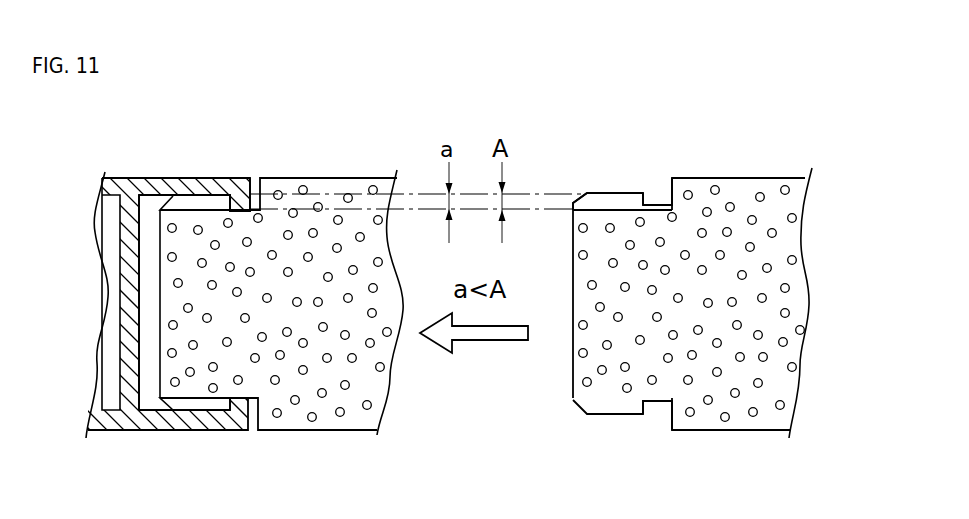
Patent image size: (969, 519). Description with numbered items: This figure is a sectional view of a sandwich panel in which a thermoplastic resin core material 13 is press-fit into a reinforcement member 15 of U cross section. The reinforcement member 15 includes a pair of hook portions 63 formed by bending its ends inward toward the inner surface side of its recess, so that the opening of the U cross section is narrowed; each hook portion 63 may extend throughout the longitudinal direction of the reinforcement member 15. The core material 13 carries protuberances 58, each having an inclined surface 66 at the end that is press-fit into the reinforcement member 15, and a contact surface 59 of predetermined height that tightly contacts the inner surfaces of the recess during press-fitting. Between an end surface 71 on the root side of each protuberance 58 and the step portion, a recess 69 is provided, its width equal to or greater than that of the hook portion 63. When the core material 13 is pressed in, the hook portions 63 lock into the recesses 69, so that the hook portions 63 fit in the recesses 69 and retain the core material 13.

The thermoplastic resin core material 13 is at (327, 372).
The reinforcement member 15 is at (163, 177).
The protuberance 58 is at (208, 405).
The contact surface 59 is at (209, 178).
The hook portion 63 is at (245, 203).
The inclined surface 66 is at (573, 203).
The recess 69 is at (658, 405).
The end surface 71 is at (647, 202).